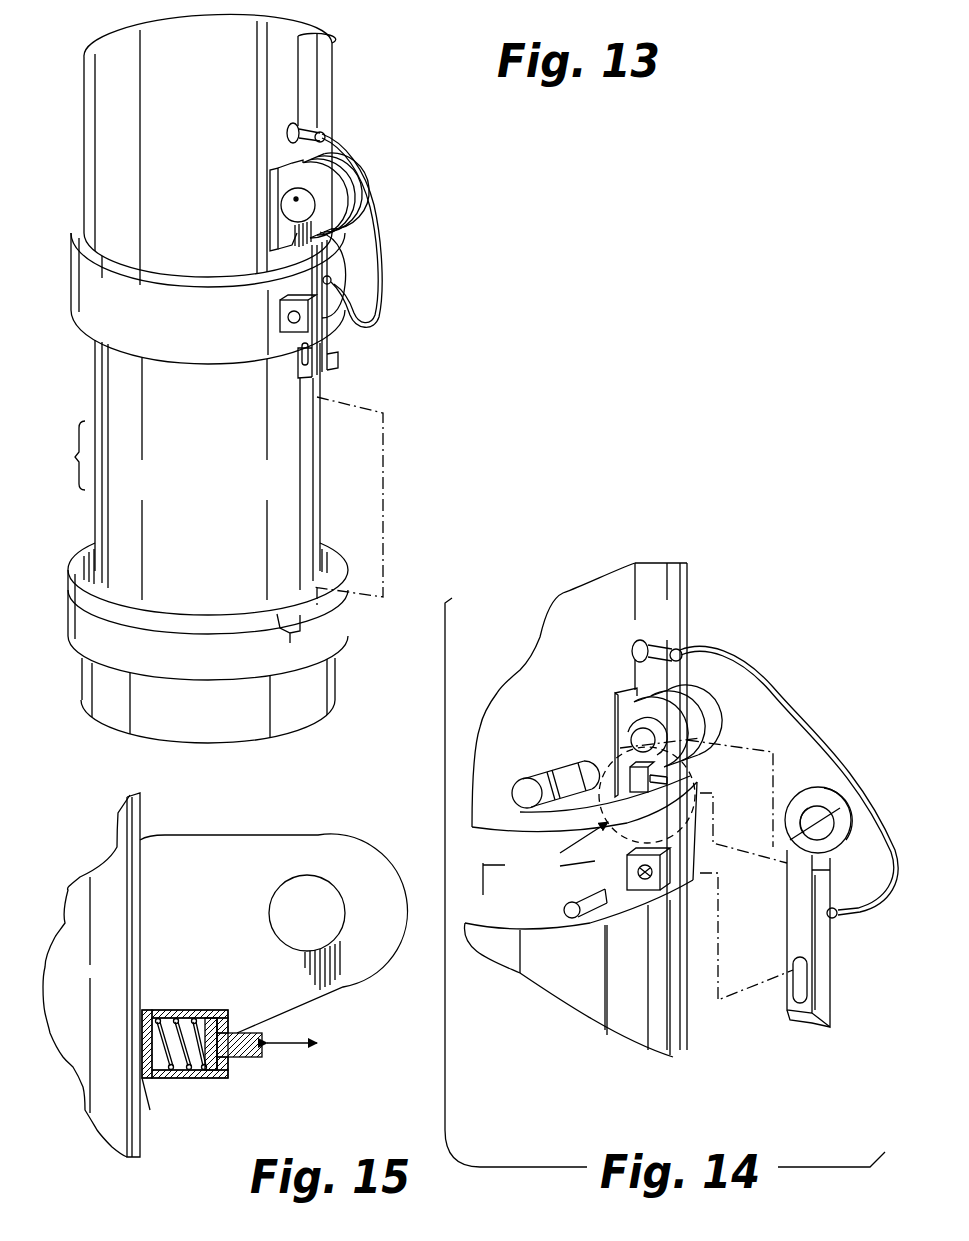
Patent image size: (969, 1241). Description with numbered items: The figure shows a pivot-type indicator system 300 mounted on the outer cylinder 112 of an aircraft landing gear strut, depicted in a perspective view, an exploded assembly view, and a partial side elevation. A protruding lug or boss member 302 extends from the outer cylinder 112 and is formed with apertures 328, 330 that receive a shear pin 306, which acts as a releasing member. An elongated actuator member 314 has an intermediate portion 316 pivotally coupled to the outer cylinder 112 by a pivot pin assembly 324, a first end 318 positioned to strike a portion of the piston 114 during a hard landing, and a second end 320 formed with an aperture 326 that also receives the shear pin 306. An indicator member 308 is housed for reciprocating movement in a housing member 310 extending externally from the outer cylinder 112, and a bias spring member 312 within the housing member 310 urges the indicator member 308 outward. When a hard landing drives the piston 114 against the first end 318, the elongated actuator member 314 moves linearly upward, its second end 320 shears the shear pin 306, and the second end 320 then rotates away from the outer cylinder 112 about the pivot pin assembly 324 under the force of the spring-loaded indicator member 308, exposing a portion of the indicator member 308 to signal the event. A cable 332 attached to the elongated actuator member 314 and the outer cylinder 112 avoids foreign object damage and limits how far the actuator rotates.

In FIG. 13, the outer cylinder 112 is at (317, 77).
In FIG. 14, the outer cylinder 112 is at (680, 592).
In FIG. 15, the outer cylinder 112 is at (140, 848).
In FIG. 13, the piston 114 is at (340, 611).
In FIG. 13, the pivot-type indicator system 300 is at (367, 244).
In FIG. 13, the boss member 302 is at (337, 158).
In FIG. 14, the boss member 302 is at (631, 683).
In FIG. 15, the boss member 302 is at (247, 857).
In FIG. 13, the shear pin 306 is at (290, 207).
In FIG. 14, the shear pin 306 is at (523, 790).
In FIG. 15, the indicator member 308 is at (250, 1058).
In FIG. 15, the housing member 310 is at (195, 1072).
In FIG. 15, the bias spring member 312 is at (183, 1072).
In FIG. 13, the elongated actuator member 314 is at (347, 347).
In FIG. 14, the elongated actuator member 314 is at (767, 998).
In FIG. 14, the intermediate portion 316 is at (833, 950).
In FIG. 14, the first end 318 is at (810, 1033).
In FIG. 14, the second end 320 is at (820, 787).
In FIG. 14, the pivot pin assembly 324 is at (600, 913).
In FIG. 14, the aperture 326 is at (810, 840).
In FIG. 14, the aperture 328 is at (633, 751).
In FIG. 14, the aperture 330 is at (710, 722).
In FIG. 15, the aperture 330 is at (285, 906).
In FIG. 13, the cable 332 is at (381, 234).
In FIG. 14, the cable 332 is at (777, 683).